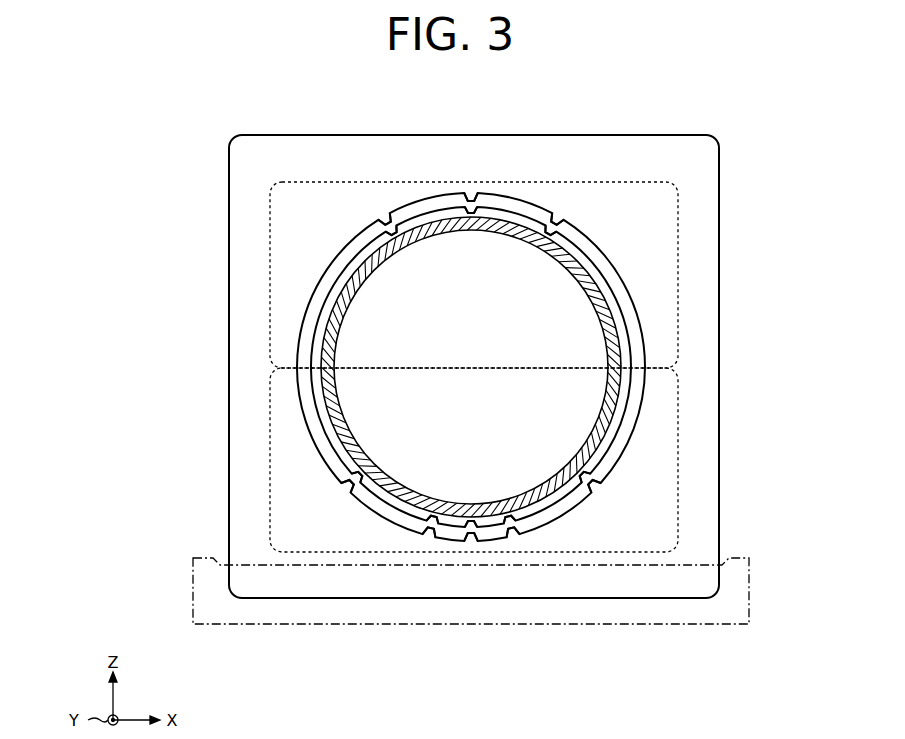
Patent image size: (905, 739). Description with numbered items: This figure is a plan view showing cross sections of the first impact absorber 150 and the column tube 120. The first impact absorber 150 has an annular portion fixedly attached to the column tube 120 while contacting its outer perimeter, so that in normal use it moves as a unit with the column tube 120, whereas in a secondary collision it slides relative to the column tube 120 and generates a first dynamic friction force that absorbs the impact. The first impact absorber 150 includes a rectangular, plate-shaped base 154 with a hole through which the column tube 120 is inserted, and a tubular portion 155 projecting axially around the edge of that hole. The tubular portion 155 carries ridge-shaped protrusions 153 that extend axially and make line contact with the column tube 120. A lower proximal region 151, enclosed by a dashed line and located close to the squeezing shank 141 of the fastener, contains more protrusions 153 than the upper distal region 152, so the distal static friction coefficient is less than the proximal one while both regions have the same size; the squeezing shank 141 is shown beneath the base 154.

The first impact absorber 150 is at (313, 134).
The base 154 is at (578, 134).
The tubular portion 155 is at (350, 243).
The distal region 152 is at (270, 266).
The proximal region 151 is at (270, 461).
The protrusions 153 is at (547, 235).
The column tube 120 is at (613, 263).
The squeezing shank 141 is at (233, 626).